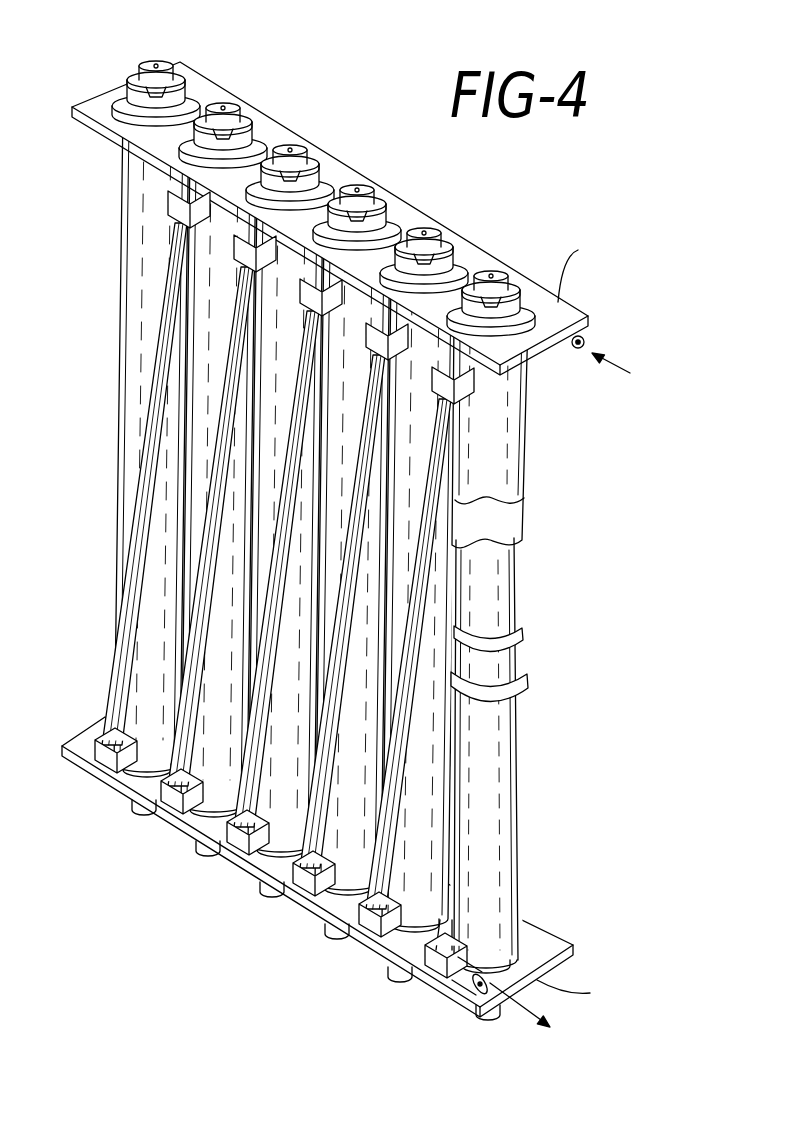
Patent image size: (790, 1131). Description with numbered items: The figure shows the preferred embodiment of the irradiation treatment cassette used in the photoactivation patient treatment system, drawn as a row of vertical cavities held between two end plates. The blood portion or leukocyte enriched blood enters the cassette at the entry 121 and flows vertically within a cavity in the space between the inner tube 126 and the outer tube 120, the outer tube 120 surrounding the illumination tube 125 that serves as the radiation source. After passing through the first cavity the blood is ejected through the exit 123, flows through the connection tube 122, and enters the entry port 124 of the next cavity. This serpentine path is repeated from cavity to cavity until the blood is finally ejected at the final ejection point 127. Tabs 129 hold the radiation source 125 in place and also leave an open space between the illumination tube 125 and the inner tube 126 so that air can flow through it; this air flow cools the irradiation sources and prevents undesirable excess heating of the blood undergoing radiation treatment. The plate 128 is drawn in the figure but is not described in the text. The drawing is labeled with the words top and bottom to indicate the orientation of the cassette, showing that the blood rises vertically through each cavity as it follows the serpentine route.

The outer tube 120 is at (356, 531).
The cassette blood entry 121 is at (460, 985).
The connection tube 122 is at (263, 687).
The cavity exit 123 is at (220, 93).
The entry port 124 is at (115, 778).
The illumination tube 125 is at (135, 368).
The inner tube 126 is at (516, 662).
The final ejection point 127 is at (588, 339).
The end plate 128 is at (350, 158).
The tabs 129 is at (121, 92).